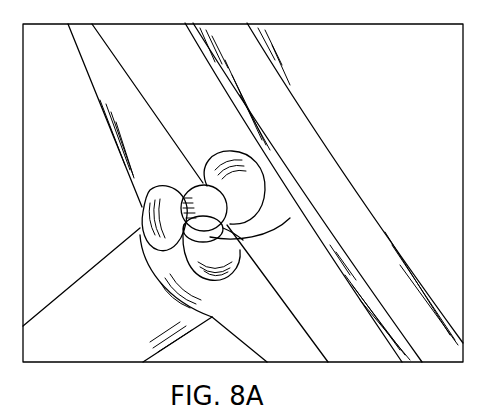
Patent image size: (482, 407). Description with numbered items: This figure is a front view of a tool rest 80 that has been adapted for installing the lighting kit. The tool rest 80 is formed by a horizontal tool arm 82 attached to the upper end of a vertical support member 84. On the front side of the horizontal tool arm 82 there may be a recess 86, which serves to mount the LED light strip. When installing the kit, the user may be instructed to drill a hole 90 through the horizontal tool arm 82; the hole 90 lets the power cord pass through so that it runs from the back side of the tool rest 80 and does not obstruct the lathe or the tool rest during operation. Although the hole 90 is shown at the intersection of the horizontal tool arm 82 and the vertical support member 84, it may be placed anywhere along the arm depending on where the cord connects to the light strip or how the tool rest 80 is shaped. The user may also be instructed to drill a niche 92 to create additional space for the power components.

The tool rest 80 is at (366, 89).
The horizontal tool arm 82 is at (115, 93).
The vertical support member 84 is at (80, 290).
The recess 86 is at (298, 275).
The hole 90 is at (290, 218).
The niche 92 is at (247, 188).